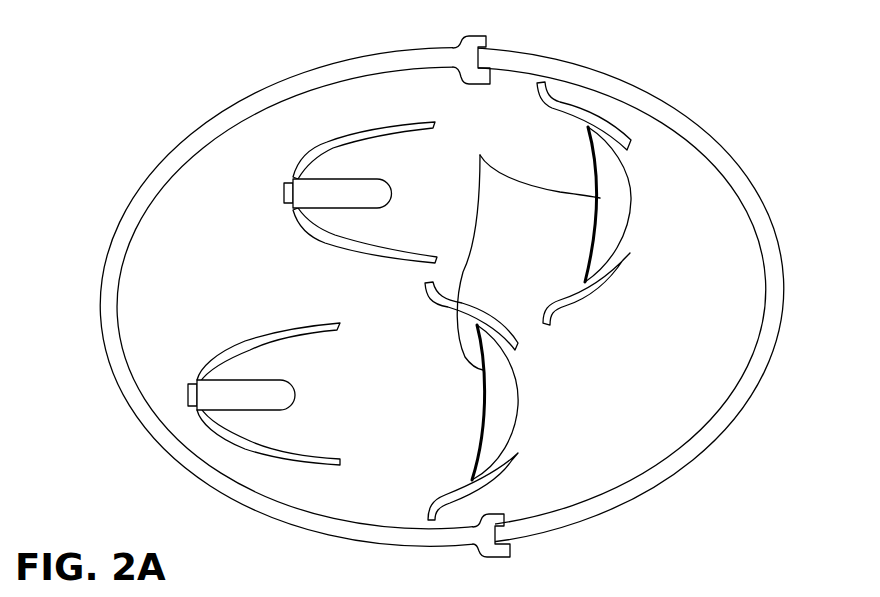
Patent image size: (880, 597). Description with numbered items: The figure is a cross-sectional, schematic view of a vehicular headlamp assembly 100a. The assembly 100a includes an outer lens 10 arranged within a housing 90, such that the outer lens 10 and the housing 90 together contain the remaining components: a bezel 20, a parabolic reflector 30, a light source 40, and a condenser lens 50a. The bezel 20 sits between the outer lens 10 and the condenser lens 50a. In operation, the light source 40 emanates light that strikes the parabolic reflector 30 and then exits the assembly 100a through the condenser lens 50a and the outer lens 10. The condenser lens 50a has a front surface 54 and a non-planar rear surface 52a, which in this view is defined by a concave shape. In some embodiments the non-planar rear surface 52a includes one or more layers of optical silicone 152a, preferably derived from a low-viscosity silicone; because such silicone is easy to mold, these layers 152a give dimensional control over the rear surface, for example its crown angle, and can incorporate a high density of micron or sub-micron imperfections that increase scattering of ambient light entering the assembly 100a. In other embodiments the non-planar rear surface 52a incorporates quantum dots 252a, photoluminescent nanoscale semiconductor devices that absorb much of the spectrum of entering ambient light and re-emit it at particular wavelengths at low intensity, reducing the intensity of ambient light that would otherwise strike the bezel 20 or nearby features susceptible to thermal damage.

The vehicular headlamp assembly 100a is at (465, 298).
The outer lens 10 is at (577, 62).
The housing 90 is at (368, 528).
The bezel 20 is at (603, 110).
The parabolic reflector 30 is at (261, 266).
The light source 40 is at (330, 190).
The condenser lens 50a is at (631, 318).
The front surface 54 is at (636, 214).
The non-planar rear surface 52a is at (602, 228).
The layers of optical silicone 152a is at (480, 155).
The quantum dots 252a is at (470, 262).